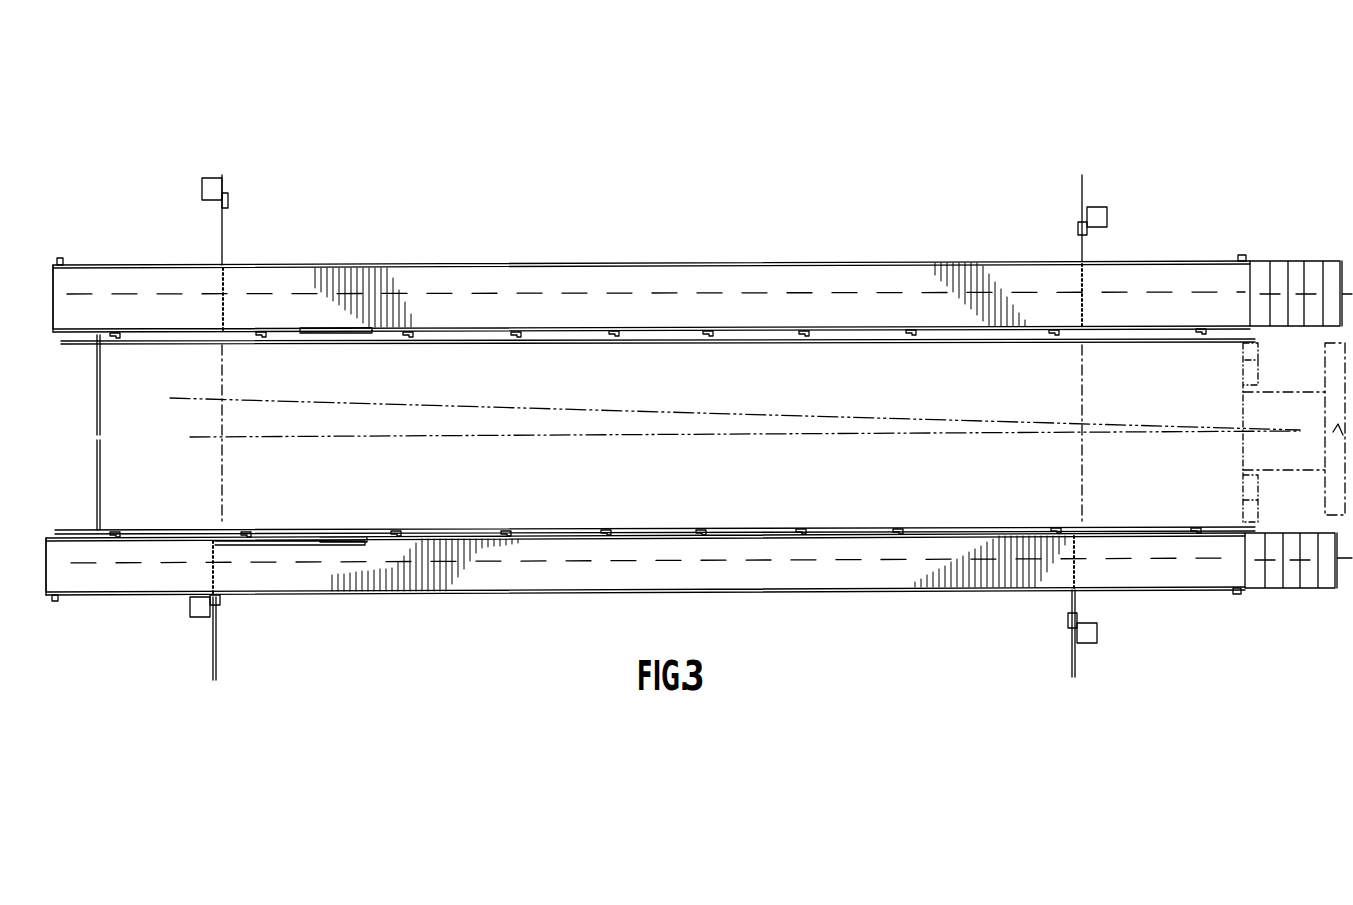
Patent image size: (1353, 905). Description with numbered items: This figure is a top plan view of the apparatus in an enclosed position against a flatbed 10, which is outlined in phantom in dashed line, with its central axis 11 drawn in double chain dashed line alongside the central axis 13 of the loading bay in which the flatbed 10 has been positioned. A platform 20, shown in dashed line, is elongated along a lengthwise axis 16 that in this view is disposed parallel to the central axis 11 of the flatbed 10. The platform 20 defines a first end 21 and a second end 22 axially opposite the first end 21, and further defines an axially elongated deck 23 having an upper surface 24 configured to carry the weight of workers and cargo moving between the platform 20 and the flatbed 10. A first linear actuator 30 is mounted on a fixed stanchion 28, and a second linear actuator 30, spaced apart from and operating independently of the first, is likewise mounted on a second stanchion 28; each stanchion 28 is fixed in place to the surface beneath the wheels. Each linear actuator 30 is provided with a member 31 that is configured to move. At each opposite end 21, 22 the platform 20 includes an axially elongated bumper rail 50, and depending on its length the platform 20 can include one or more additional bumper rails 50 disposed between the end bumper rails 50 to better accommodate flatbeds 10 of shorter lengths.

The flatbed 10 is at (198, 488).
The central axis of the flatbed 11 is at (488, 436).
The central axis of the loading bay 13 is at (632, 406).
The lengthwise axis 16 is at (820, 292).
The platform 20 is at (650, 395).
The first end 21 is at (1237, 238).
The second end 22 is at (82, 246).
The deck 23 is at (777, 285).
The upper surface 24 is at (740, 313).
The stanchion 28 is at (209, 178).
The linear actuator 30 is at (210, 222).
The member 31 is at (227, 233).
The bumper rail 50 is at (158, 345).